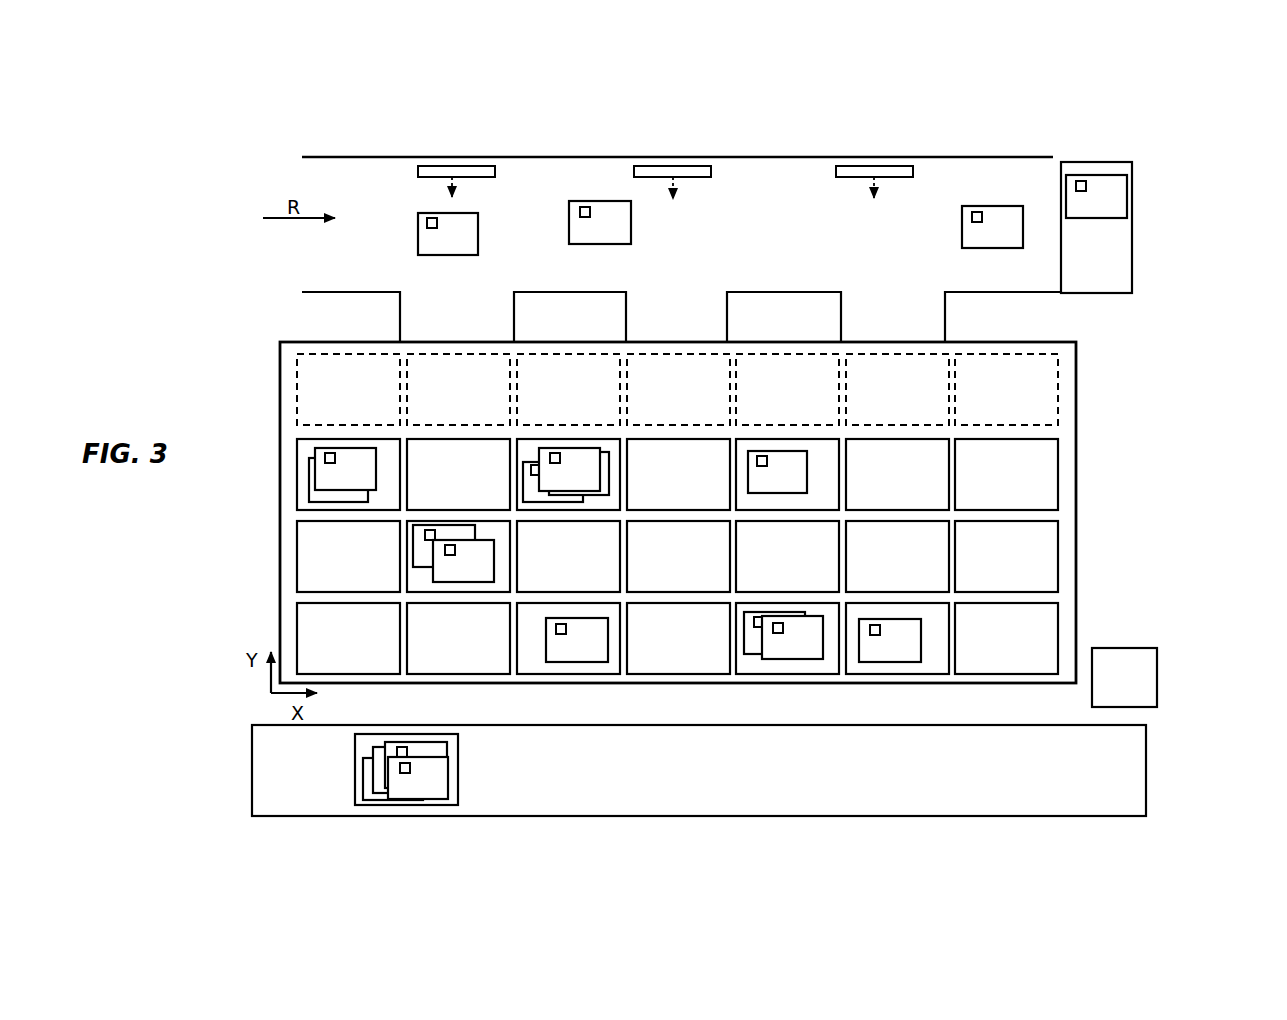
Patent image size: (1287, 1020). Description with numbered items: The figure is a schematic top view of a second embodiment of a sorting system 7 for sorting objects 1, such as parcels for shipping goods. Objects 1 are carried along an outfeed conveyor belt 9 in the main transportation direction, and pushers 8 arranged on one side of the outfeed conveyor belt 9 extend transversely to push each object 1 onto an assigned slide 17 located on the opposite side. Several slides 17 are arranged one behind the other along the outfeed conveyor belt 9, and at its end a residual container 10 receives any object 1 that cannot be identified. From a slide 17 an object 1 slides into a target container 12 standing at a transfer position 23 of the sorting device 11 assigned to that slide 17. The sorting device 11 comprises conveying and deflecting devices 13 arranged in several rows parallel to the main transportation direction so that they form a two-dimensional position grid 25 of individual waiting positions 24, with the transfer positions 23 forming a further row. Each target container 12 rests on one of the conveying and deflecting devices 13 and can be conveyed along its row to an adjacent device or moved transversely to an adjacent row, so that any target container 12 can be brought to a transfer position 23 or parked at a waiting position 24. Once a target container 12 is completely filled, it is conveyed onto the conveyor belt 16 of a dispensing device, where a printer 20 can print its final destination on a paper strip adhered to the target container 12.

The object 1 is at (478, 233).
The sorting system 7 is at (617, 128).
The pusher 8 is at (495, 170).
The outfeed conveyor belt 9 is at (760, 180).
The residual container 10 is at (1132, 185).
The sorting device 11 is at (1076, 360).
The target container 12 is at (1058, 453).
The conveying and deflecting device 13 is at (1068, 530).
The conveyor belt 16 is at (1146, 730).
The slide 17 is at (445, 313).
The printer 20 is at (1128, 648).
The transfer position 23 is at (440, 398).
The waiting position 24 is at (355, 563).
The two-dimensional position grid 25 is at (1110, 462).